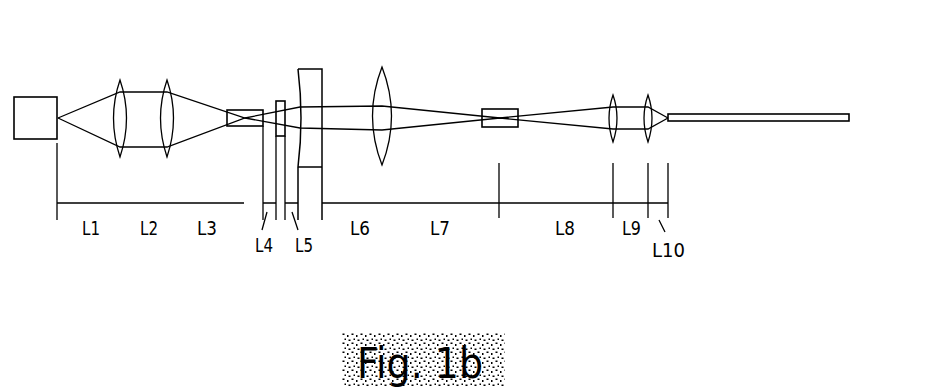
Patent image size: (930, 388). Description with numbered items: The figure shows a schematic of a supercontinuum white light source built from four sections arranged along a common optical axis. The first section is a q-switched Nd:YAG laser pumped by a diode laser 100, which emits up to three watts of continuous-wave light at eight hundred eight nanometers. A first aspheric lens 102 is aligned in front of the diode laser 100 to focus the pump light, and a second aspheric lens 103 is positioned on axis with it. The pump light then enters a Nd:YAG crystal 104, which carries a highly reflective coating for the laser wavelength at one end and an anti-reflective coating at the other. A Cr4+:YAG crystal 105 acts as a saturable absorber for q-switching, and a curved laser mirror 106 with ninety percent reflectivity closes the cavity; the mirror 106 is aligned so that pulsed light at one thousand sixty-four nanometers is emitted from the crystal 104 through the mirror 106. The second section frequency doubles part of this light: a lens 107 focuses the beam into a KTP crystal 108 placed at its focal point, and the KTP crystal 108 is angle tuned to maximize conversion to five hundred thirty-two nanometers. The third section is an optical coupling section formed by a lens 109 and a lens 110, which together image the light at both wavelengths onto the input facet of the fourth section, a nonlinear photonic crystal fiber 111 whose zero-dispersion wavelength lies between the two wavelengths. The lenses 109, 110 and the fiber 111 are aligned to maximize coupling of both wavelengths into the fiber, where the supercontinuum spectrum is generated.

The diode laser 100 is at (43, 100).
The first aspheric lens 102 is at (120, 220).
The second aspheric lens 103 is at (167, 220).
The Nd:YAG crystal 104 is at (244, 220).
The Cr4+:YAG crystal 105 is at (280, 101).
The laser mirror 106 is at (311, 73).
The lens 107 is at (382, 220).
The KTP crystal 108 is at (501, 109).
The lens 109 is at (613, 142).
The lens 110 is at (648, 95).
The optical fiber 111 is at (693, 112).